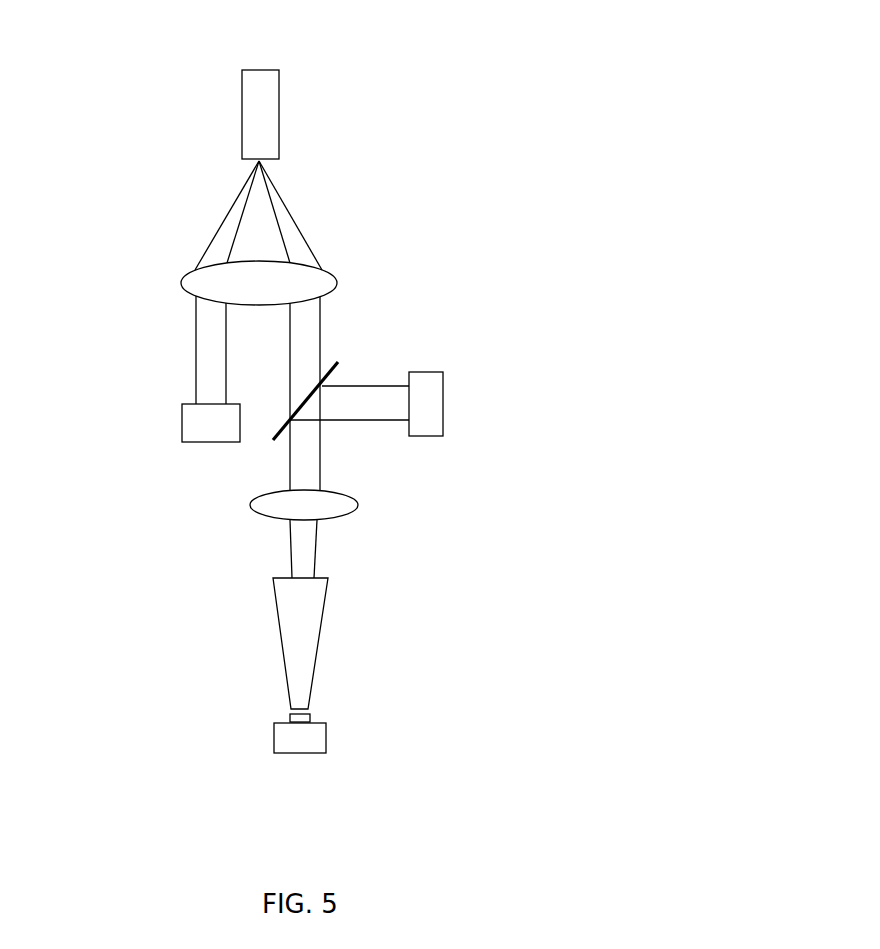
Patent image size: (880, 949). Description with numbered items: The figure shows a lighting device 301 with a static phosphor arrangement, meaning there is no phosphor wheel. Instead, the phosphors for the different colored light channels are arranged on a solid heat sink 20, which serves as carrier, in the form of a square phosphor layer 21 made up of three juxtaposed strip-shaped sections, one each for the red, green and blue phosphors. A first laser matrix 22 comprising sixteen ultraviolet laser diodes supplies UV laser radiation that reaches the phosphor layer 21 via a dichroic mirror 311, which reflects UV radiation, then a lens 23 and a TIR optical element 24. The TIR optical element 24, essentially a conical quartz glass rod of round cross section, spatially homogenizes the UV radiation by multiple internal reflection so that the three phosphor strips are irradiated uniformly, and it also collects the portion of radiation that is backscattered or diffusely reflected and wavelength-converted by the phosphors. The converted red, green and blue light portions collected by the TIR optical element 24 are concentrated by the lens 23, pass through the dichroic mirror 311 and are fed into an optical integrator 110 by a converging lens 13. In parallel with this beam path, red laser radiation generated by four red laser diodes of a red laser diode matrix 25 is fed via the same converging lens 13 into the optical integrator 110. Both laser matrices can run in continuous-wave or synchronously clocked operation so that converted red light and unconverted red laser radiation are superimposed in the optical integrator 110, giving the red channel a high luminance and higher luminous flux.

The lighting device 301 is at (416, 90).
The optical integrator 110 is at (242, 109).
The converging lens 13 is at (198, 281).
The red laser diode matrix 25 is at (190, 427).
The dichroic mirror 311 is at (338, 362).
The first laser matrix 22 is at (433, 404).
The lens 23 is at (348, 506).
The TIR optical element 24 is at (318, 643).
The phosphor layer 21 is at (293, 719).
The heat sink 20 is at (326, 738).